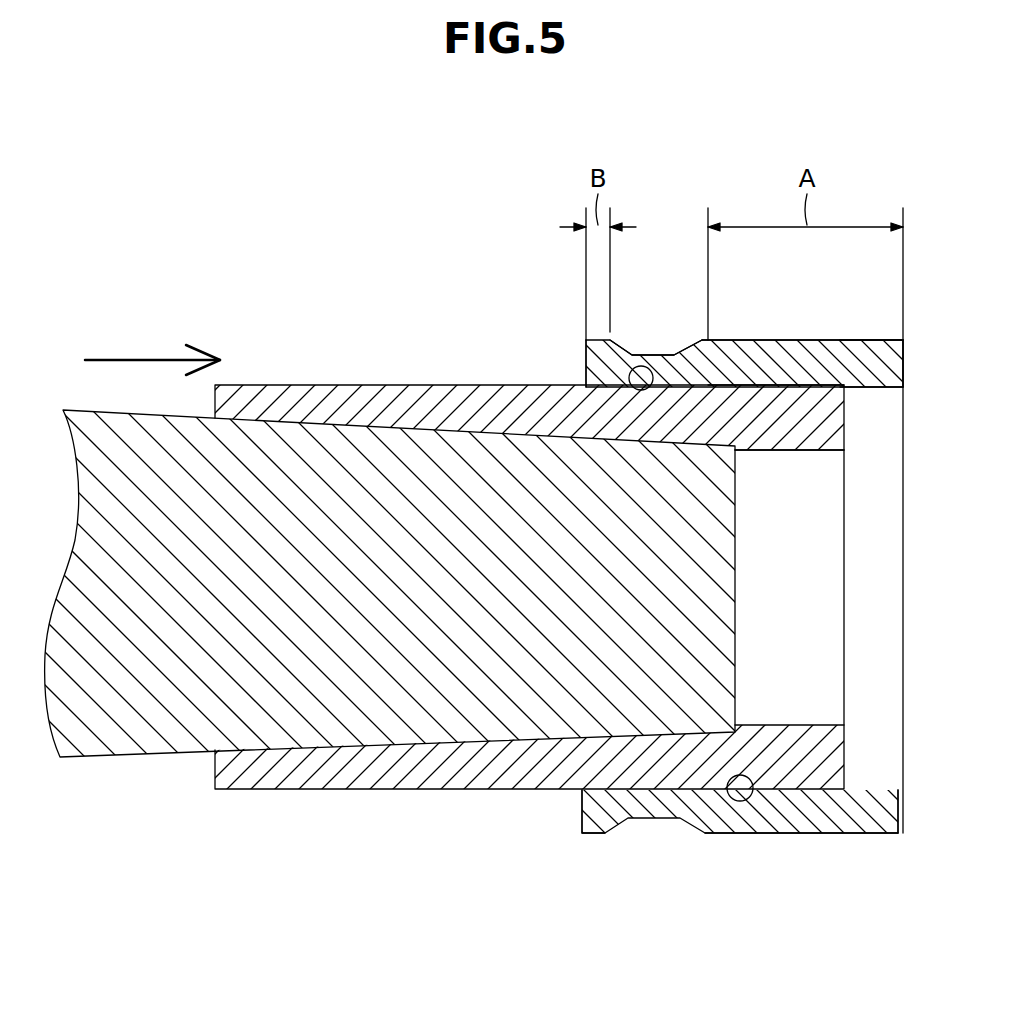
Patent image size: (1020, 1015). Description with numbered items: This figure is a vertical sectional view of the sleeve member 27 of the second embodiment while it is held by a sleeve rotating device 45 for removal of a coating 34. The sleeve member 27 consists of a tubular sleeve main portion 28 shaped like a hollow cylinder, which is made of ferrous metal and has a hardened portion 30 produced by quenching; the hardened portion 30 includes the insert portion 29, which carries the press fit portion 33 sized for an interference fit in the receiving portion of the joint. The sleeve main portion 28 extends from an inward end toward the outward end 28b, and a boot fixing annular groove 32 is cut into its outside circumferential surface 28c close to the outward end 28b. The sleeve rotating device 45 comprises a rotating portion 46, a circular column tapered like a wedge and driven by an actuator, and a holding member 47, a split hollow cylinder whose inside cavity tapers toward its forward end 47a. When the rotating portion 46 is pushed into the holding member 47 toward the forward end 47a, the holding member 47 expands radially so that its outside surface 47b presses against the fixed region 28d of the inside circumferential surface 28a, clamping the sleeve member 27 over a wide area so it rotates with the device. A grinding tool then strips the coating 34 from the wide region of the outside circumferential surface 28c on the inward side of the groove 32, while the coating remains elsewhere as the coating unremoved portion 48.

The sleeve member 27 is at (912, 356).
The sleeve main portion 28 is at (718, 340).
The inside circumferential surface 28a is at (750, 798).
The outward end 28b is at (600, 835).
The outside circumferential surface 28c is at (785, 340).
The fixed region 28d is at (630, 355).
The insert portion 29 is at (860, 340).
The press fit portion 33 is at (871, 315).
The hardened portion 30 is at (840, 835).
The boot fixing annular groove 32 is at (665, 357).
The coating 34 is at (586, 320).
The sleeve rotating device 45 is at (325, 355).
The rotating portion 46 is at (120, 745).
The holding member 47 is at (408, 403).
The forward end 47a is at (832, 432).
The outside surface 47b is at (830, 385).
The coating unremoved portion 48 is at (900, 812).